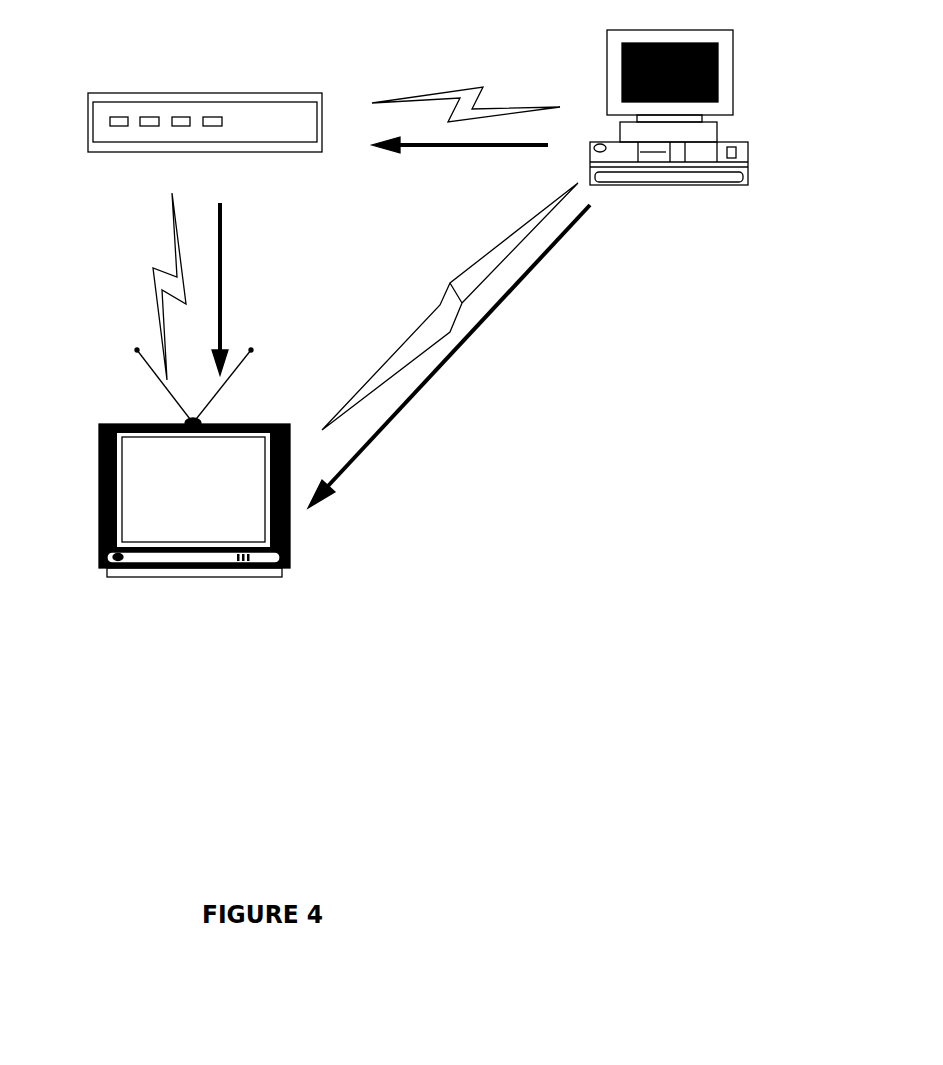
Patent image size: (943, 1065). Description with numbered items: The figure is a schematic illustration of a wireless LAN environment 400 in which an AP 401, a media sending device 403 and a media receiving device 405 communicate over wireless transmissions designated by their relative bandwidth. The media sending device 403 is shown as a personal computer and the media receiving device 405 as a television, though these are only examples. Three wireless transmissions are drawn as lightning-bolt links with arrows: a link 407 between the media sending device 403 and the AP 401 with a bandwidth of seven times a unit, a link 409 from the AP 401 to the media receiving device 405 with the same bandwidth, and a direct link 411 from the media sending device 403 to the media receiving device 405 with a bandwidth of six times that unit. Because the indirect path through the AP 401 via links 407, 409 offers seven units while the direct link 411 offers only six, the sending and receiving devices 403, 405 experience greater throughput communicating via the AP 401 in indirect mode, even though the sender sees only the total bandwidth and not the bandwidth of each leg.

The wireless LAN environment 400 is at (735, 662).
The AP 401 is at (100, 146).
The media sending device 403 is at (789, 170).
The media receiving device 405 is at (267, 585).
The link 407 is at (467, 78).
The link 409 is at (145, 278).
The direct link 411 is at (513, 241).